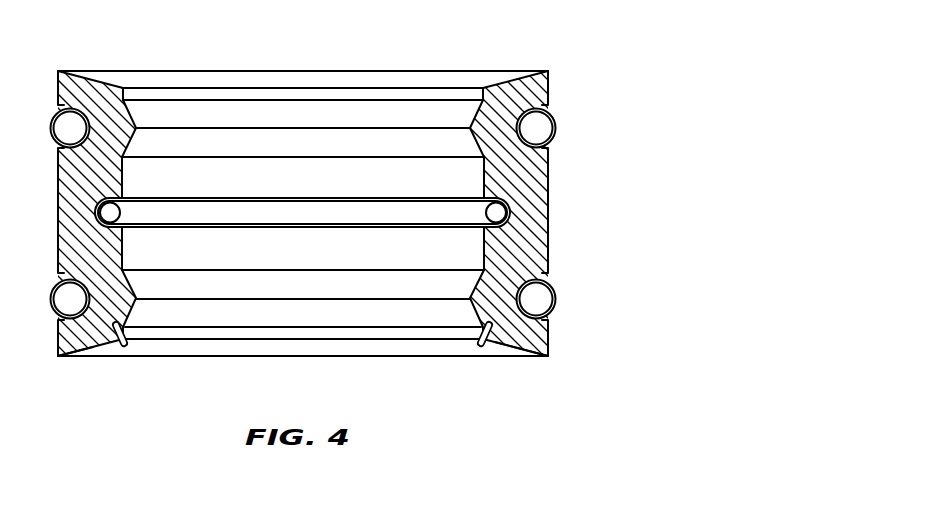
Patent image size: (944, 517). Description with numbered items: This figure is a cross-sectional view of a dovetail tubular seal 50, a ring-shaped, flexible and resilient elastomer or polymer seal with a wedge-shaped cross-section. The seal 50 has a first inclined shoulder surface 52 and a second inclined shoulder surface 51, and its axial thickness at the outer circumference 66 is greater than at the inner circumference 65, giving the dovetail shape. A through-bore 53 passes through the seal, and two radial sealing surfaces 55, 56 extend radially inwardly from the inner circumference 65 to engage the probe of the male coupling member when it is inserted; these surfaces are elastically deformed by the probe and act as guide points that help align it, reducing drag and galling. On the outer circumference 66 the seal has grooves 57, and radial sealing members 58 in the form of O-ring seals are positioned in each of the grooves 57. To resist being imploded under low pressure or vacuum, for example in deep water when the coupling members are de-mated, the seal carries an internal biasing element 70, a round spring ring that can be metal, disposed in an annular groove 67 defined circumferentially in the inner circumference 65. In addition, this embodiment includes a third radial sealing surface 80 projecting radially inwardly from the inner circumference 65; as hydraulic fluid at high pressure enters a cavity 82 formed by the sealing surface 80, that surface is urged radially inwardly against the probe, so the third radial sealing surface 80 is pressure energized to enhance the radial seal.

The tubular seal 50 is at (472, 258).
The second inclined shoulder surface 51 is at (86, 72).
The first inclined shoulder surface 52 is at (93, 356).
The through-bore 53 is at (239, 136).
The radial sealing surface 55 is at (148, 120).
The radial sealing surface 56 is at (162, 299).
The groove 57 is at (551, 142).
The radial sealing member 58 is at (556, 298).
The inner circumference 65 is at (482, 177).
The outer circumference 66 is at (548, 245).
The annular groove 67 is at (320, 203).
The internal biasing element 70 is at (506, 213).
The third radial sealing surface 80 is at (485, 342).
The cavity 82 is at (493, 348).